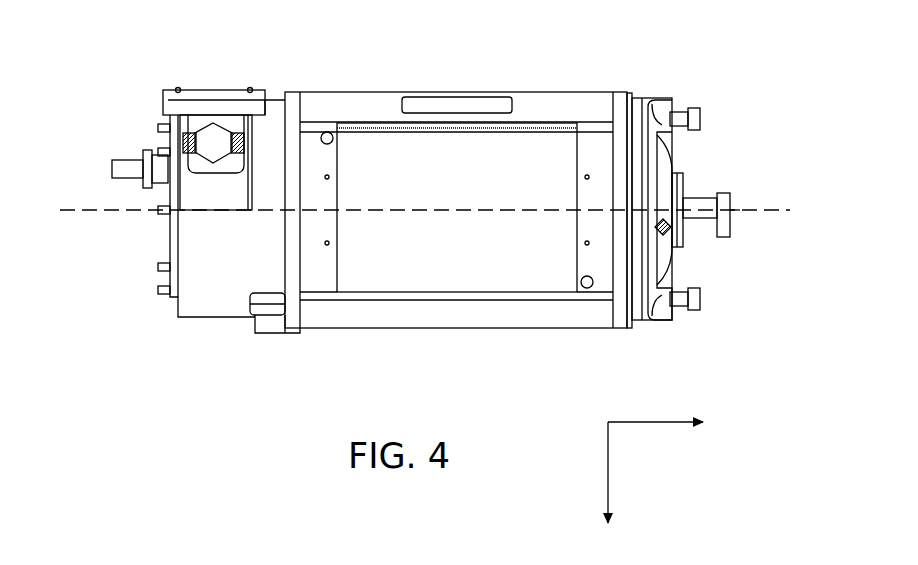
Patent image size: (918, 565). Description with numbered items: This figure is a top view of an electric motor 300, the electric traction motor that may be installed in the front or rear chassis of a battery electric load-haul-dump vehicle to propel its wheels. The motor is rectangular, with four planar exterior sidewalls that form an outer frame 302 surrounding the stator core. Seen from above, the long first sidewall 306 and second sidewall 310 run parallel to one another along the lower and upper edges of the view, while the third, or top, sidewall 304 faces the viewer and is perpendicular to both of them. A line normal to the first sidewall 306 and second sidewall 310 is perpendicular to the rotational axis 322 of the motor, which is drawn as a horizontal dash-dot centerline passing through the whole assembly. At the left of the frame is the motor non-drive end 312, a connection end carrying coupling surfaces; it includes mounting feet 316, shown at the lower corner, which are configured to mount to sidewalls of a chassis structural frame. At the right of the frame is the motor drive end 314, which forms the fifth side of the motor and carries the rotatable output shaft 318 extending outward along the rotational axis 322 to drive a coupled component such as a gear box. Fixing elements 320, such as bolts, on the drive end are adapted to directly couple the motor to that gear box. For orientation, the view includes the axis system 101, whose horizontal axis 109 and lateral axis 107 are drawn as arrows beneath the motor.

The electric motor 300 is at (637, 38).
The outer frame 302 is at (555, 362).
The third (top) sidewall 304 is at (456, 207).
The first sidewall 306 is at (440, 330).
The second sidewall 310 is at (383, 90).
The motor non-drive end 312 is at (213, 66).
The motor drive end 314 is at (745, 148).
The mounting feet 316 is at (275, 335).
The output shaft 318 is at (698, 220).
The fixing elements 320 is at (694, 312).
The rotational axis 322 is at (120, 212).
The axis system 101 is at (726, 483).
The lateral axis 107 is at (607, 470).
The horizontal axis 109 is at (637, 420).